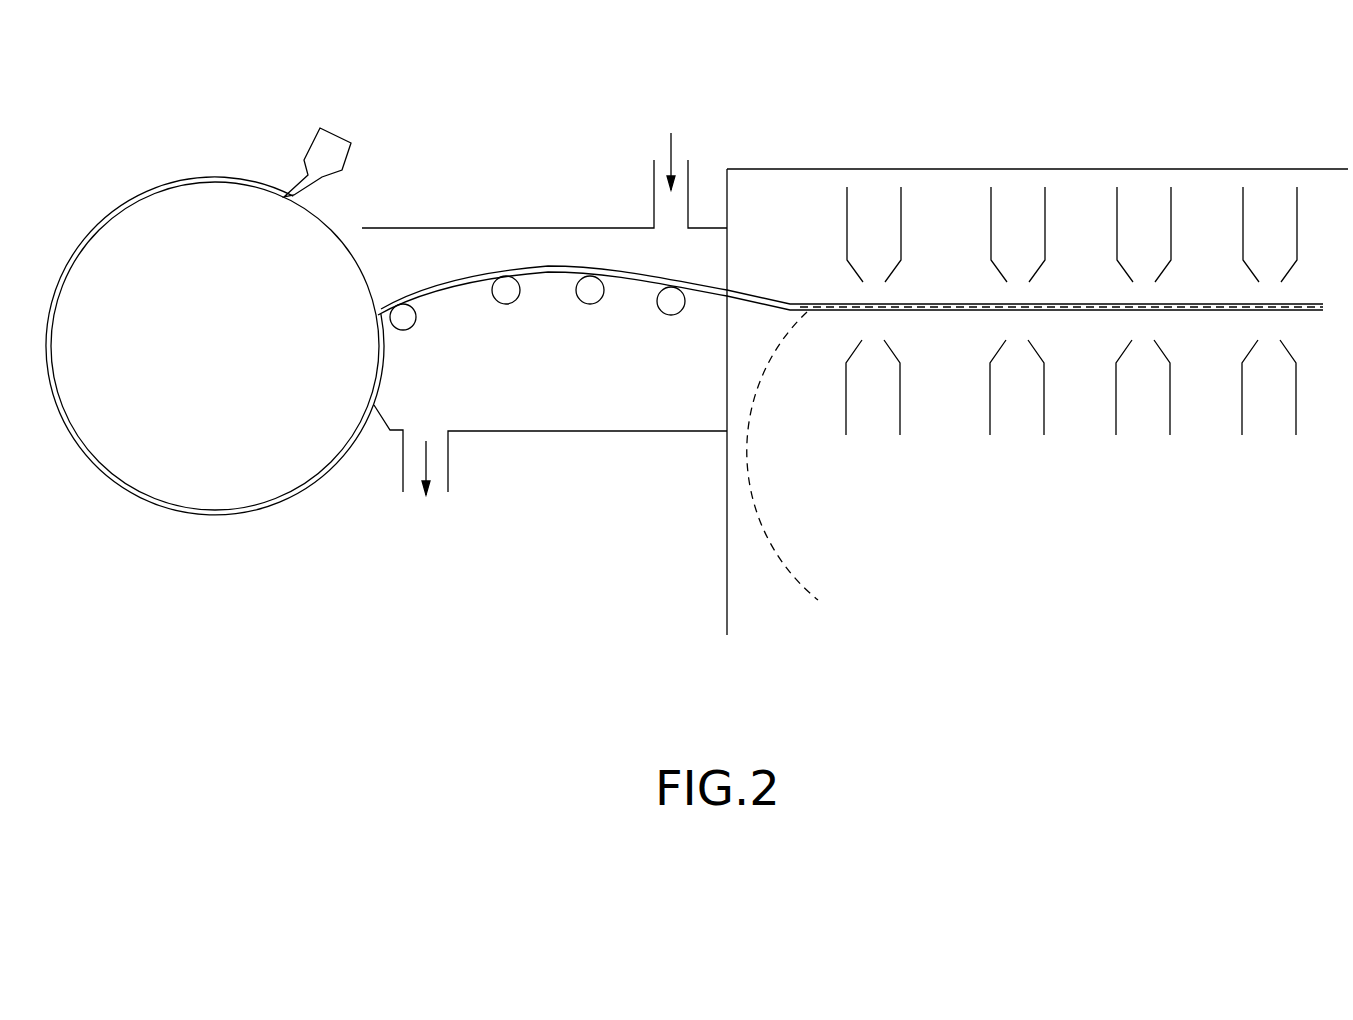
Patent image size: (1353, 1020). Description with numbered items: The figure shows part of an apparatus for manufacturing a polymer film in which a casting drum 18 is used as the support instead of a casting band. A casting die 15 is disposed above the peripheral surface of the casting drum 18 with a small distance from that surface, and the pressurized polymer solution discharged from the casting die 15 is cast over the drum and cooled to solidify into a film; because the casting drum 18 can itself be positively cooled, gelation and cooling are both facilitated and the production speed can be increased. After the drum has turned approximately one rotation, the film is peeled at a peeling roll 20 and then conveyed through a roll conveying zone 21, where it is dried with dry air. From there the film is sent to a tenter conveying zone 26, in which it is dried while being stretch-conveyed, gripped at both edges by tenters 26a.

The casting die 15 is at (333, 142).
The casting drum 18 is at (177, 198).
The peeling roll 20 is at (400, 313).
The roll conveying zone 21 is at (528, 228).
The tenter conveying zone 26 is at (1070, 168).
The tenters 26a is at (902, 222).